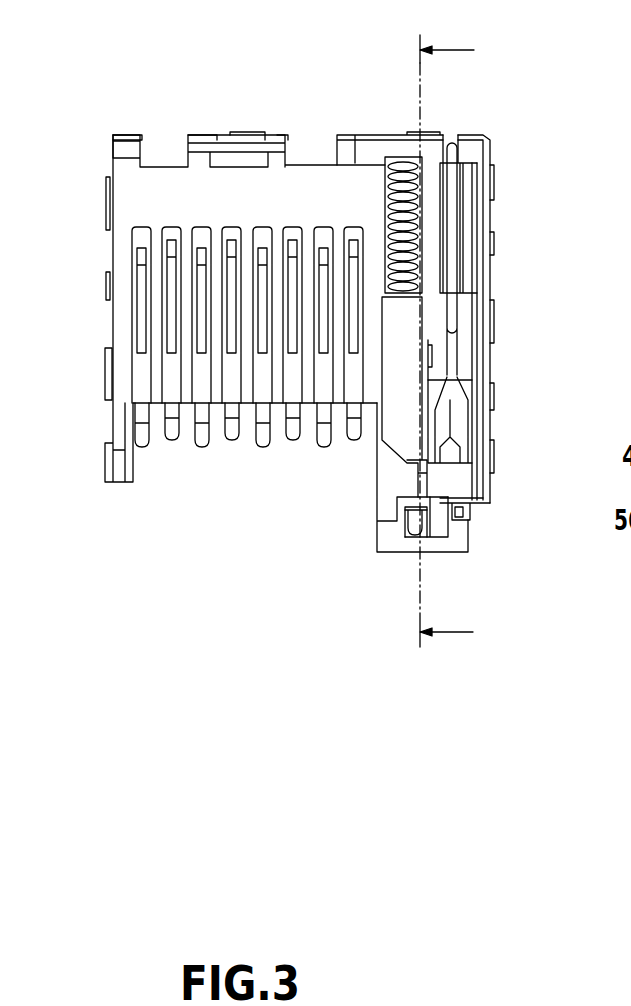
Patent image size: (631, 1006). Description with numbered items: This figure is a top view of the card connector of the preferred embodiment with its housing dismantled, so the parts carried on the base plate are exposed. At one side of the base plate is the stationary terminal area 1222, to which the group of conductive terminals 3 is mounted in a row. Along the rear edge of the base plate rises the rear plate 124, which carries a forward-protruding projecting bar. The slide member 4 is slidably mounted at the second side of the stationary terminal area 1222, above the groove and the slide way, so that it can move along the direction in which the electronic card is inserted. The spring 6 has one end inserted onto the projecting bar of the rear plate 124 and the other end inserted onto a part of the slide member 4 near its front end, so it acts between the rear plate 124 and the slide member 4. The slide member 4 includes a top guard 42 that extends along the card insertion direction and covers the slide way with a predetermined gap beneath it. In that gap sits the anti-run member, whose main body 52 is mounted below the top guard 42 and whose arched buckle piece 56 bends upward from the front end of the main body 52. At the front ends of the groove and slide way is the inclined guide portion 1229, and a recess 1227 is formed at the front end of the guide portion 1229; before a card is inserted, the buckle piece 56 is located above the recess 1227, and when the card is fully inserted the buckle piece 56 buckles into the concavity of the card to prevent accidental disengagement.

The conductive terminals 3 is at (143, 290).
The stationary terminal area 1222 is at (188, 250).
The rear plate 124 is at (362, 152).
The spring 6 is at (413, 220).
The slide member 4 is at (437, 342).
The top guard 42 is at (430, 492).
The inclined guide portion 1229 is at (430, 502).
The main body 52 is at (430, 508).
The recess 1227 is at (397, 527).
The arched buckle piece 56 is at (413, 515).